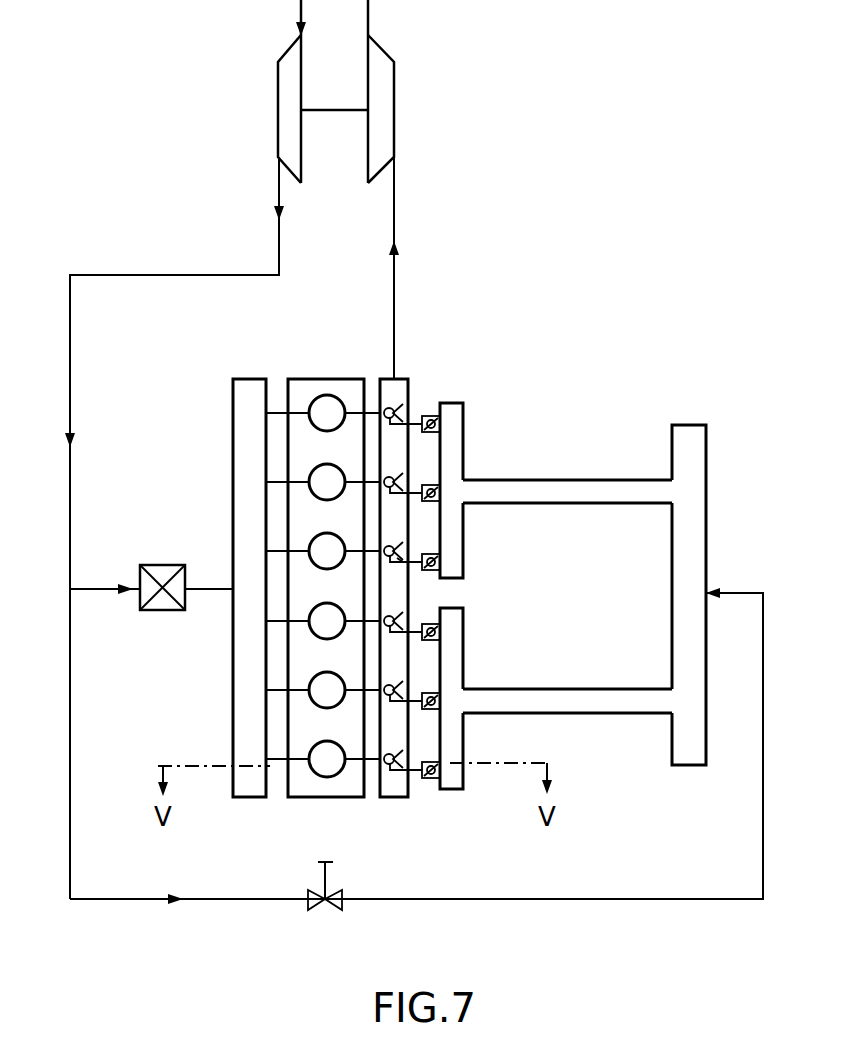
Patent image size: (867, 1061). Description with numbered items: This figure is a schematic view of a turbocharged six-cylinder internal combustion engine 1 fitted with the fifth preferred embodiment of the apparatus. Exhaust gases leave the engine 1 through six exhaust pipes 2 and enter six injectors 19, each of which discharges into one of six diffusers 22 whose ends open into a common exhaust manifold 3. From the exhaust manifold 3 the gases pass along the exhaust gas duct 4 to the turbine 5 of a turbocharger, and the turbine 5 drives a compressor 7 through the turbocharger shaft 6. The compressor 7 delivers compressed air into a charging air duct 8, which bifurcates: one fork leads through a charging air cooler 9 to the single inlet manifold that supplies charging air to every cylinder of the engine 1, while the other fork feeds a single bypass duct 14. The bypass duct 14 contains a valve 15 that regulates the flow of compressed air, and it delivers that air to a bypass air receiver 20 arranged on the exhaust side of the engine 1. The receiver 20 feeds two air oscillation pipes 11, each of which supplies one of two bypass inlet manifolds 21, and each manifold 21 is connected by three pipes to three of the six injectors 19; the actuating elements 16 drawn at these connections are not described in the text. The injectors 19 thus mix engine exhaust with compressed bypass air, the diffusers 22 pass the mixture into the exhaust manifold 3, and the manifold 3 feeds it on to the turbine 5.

The six-cylinder internal combustion engine 1 is at (311, 459).
The exhaust pipes 2 is at (368, 692).
The exhaust manifold 3 is at (403, 534).
The exhaust gas duct 4 is at (392, 283).
The turbine 5 is at (391, 106).
The turbocharger shaft 6 is at (329, 109).
The compressor 7 is at (297, 106).
The charging air duct 8 is at (127, 273).
The charging air cooler 9 is at (157, 563).
The air oscillation pipes 11 is at (567, 597).
The bypass duct 14 is at (208, 903).
The valve 15 is at (330, 910).
The actuators 16 is at (442, 490).
The injectors 19 is at (393, 479).
The bypass air receiver 20 is at (703, 566).
The bypass inlet manifolds 21 is at (460, 462).
The diffusers 22 is at (406, 566).